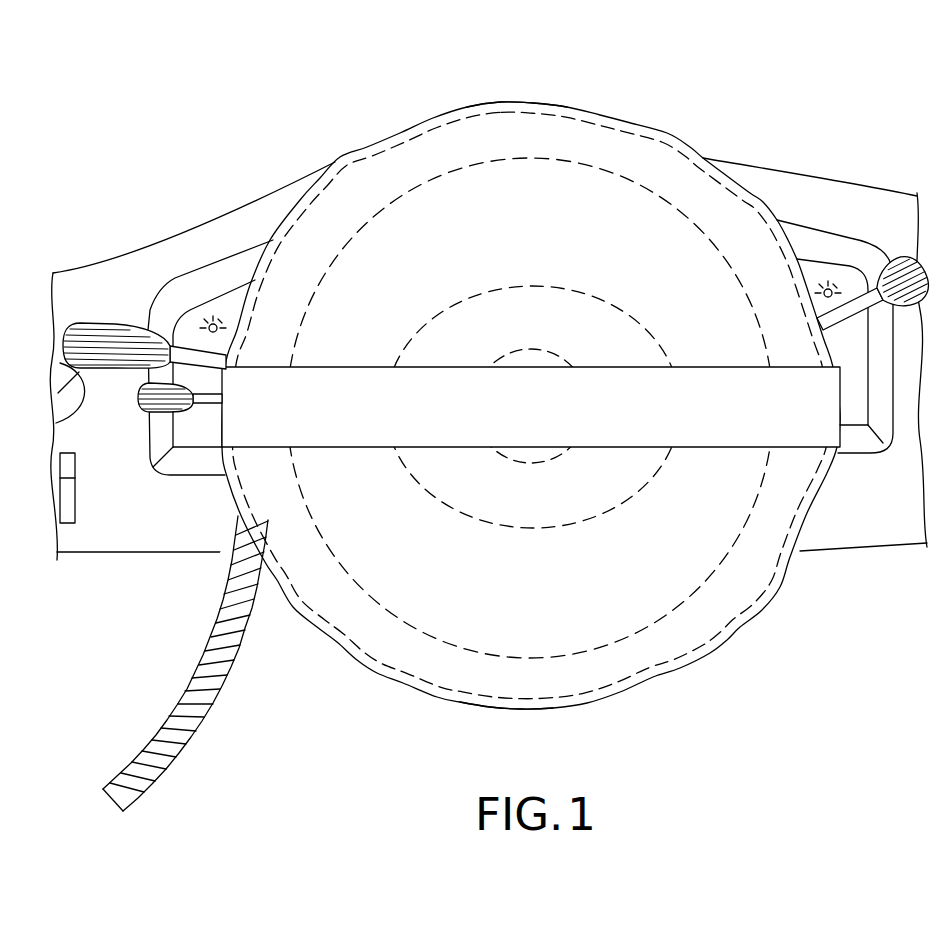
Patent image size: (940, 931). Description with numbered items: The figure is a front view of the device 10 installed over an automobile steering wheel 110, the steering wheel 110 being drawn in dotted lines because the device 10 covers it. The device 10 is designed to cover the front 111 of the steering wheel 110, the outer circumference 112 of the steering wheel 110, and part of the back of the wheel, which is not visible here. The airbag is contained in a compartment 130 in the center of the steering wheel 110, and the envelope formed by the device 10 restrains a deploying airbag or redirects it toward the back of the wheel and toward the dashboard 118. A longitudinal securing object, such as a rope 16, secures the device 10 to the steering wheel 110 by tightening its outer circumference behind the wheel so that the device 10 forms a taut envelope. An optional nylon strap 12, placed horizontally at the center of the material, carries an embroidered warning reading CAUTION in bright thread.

The device 10 is at (531, 392).
The steering wheel 110 is at (637, 150).
The front of the steering wheel 111 is at (586, 686).
The outer circumference of the steering wheel 112 is at (514, 112).
The CAUTION strap 12 is at (763, 417).
The compartment 130 is at (542, 458).
The dashboard 118 is at (191, 273).
The rope 16 is at (158, 728).